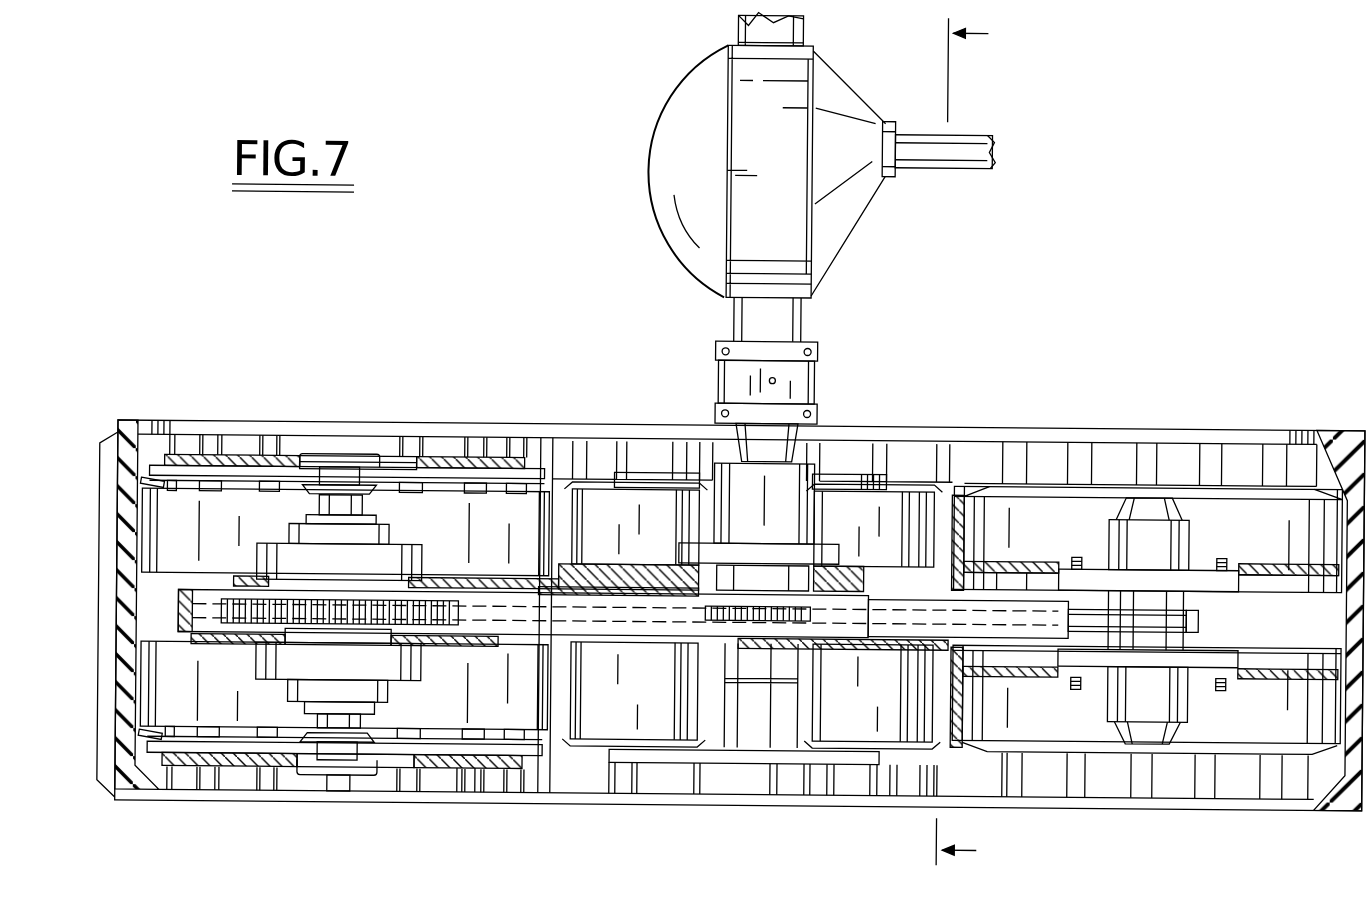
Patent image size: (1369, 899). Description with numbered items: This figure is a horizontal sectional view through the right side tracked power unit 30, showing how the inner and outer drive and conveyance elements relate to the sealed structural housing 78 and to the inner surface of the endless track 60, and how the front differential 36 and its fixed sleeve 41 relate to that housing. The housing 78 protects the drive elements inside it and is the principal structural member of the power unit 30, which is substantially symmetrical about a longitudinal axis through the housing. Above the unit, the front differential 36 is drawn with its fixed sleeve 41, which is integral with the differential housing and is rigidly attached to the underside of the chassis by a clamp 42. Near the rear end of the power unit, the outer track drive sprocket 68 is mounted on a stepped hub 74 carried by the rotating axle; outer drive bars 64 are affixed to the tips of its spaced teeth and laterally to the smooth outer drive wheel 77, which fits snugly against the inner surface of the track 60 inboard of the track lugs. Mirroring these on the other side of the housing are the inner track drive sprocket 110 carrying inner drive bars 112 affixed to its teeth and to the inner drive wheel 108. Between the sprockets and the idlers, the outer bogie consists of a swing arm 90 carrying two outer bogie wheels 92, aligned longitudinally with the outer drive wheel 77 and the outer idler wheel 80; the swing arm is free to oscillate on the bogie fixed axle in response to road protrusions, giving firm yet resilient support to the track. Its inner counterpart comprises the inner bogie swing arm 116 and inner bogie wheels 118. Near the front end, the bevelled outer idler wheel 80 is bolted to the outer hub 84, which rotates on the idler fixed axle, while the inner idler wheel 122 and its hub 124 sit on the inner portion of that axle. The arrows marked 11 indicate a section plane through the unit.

The section line 11- 11 is at (943, 441).
The right side tracked power unit 30 is at (1190, 252).
The front differential 36 is at (749, 214).
The fixed sleeve 41 is at (735, 432).
The clamp 42 is at (783, 377).
The endless track 60 is at (130, 440).
The outer drive bars 64 is at (338, 789).
The outer track drive sprocket 68 is at (462, 775).
The stepped hub 74 is at (367, 783).
The smooth outer drive wheel 77 is at (428, 717).
The sealed structural housing 78 is at (487, 577).
The outer idler wheel 80 is at (1037, 712).
The outer hub 84 is at (1200, 652).
The swing arm 90 is at (662, 753).
The outer bogie wheels 92 is at (618, 685).
The inner drive wheel 108 is at (414, 532).
The inner track drive sprocket 110 is at (190, 458).
The inner drive bars 112 is at (340, 440).
The inner bogie swing arm 116 is at (655, 473).
The inner bogie wheels 118 is at (617, 558).
The inner idler wheel 122 is at (1029, 532).
The hub 124 is at (1202, 555).